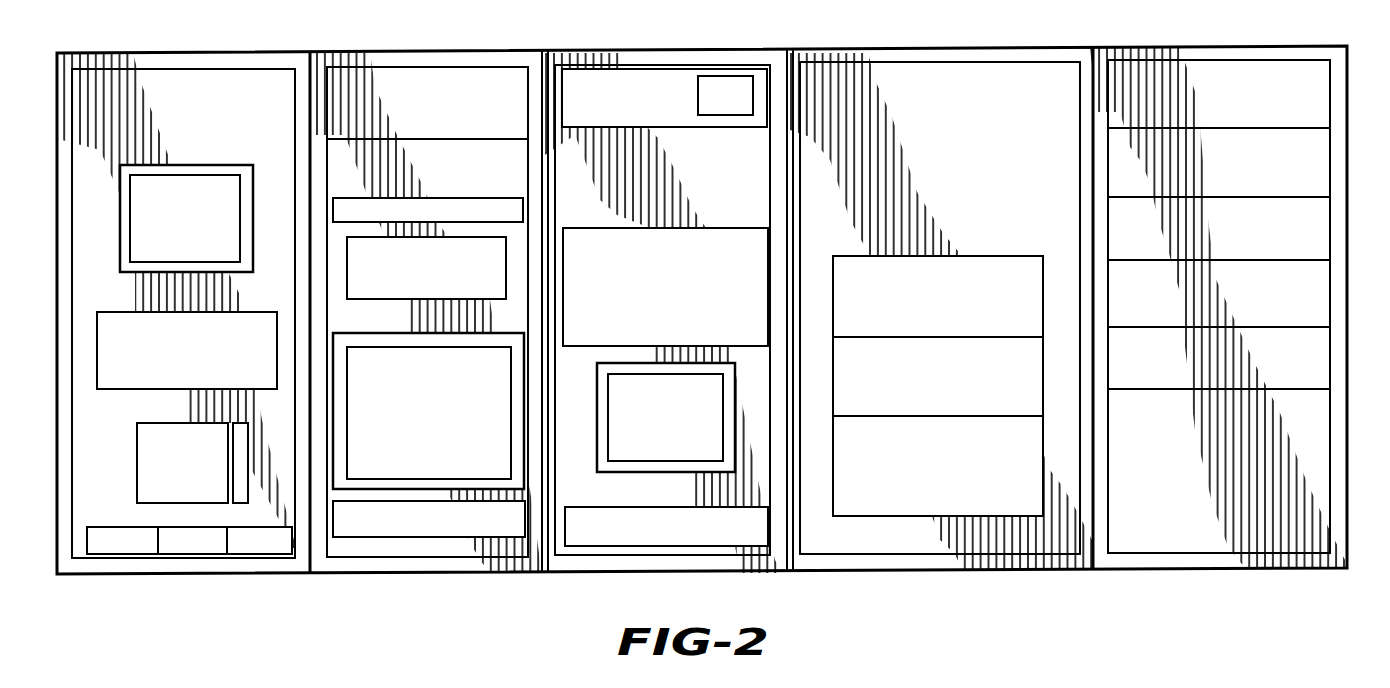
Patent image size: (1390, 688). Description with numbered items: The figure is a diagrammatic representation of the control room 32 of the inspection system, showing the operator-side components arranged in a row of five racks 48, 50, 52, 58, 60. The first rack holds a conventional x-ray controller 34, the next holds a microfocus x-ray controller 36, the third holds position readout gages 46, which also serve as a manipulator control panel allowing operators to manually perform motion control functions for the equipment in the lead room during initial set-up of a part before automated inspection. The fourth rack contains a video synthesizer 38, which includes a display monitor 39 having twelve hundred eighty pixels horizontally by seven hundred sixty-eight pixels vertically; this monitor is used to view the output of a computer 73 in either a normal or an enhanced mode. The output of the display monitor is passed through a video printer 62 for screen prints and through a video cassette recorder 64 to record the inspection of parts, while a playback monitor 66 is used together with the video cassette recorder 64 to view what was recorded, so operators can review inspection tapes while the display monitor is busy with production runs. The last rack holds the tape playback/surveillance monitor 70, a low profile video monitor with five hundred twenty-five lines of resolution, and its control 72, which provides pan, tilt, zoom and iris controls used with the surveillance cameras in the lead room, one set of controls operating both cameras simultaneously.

The control room 32 is at (104, 44).
The conventional x-ray controller 34 is at (1315, 62).
The microfocus x-ray controller 36 is at (988, 256).
The video synthesizer 38 is at (440, 200).
The display monitor 39 is at (437, 333).
The position readout gages 46 is at (635, 228).
The rack 48 is at (1273, 44).
The rack 50 is at (1020, 46).
The rack 52 is at (697, 49).
The rack 58 is at (488, 51).
The rack 60 is at (224, 53).
The video printer 62 is at (371, 287).
The video cassette recorder 64 is at (233, 318).
The playback monitor 66 is at (184, 165).
The surveillance monitor 70 is at (207, 432).
The control 72 is at (217, 536).
The computer 73 is at (728, 107).